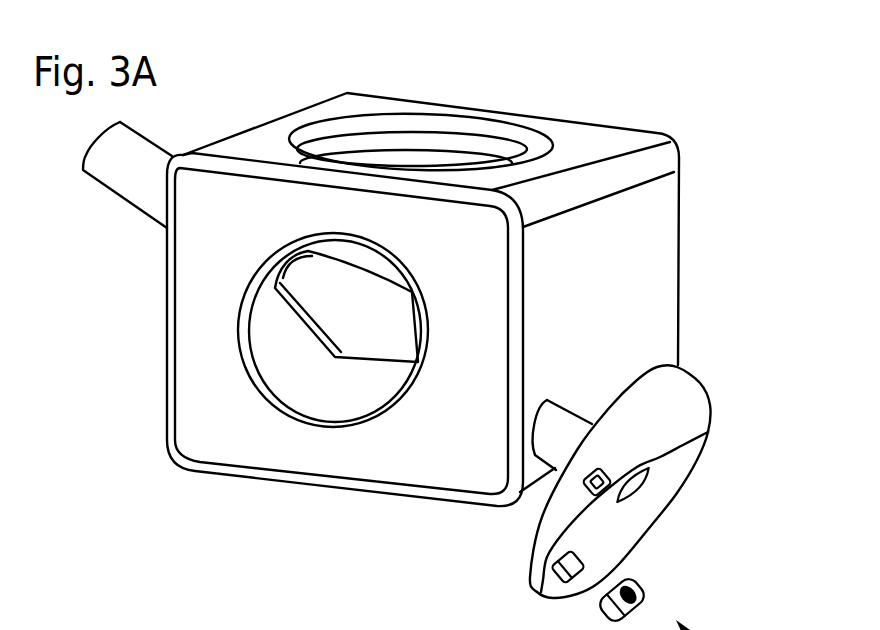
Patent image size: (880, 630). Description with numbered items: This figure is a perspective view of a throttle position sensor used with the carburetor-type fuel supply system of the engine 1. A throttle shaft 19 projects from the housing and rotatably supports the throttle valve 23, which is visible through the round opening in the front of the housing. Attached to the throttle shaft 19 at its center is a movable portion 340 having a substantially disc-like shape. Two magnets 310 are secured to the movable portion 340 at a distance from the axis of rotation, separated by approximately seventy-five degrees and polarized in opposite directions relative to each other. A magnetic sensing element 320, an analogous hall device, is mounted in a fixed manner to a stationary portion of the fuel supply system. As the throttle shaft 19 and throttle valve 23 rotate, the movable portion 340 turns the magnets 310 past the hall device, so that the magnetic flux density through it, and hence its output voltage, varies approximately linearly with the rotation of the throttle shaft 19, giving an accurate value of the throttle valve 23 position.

The engine 1 is at (122, 454).
The throttle shaft 19 is at (137, 187).
The throttle valve 23 is at (346, 316).
The movable portion 340 is at (692, 371).
The magnets 310 is at (700, 431).
The magnetic sensing element 320 is at (650, 592).